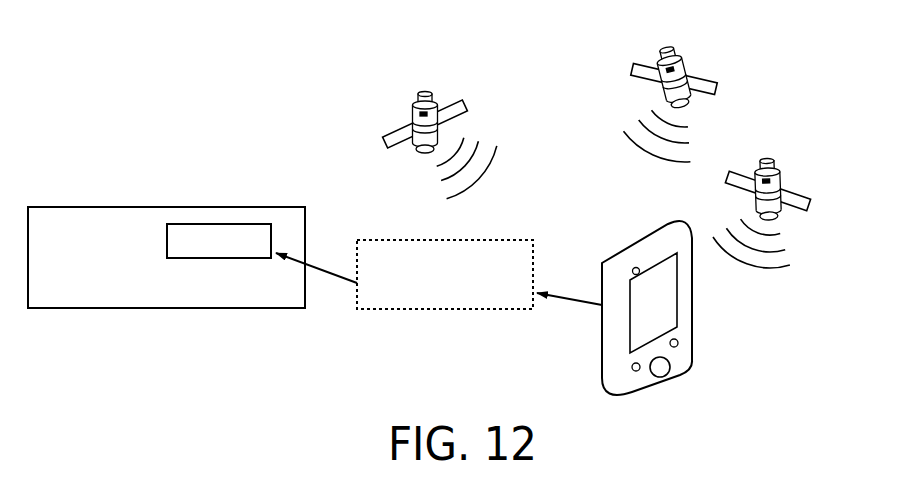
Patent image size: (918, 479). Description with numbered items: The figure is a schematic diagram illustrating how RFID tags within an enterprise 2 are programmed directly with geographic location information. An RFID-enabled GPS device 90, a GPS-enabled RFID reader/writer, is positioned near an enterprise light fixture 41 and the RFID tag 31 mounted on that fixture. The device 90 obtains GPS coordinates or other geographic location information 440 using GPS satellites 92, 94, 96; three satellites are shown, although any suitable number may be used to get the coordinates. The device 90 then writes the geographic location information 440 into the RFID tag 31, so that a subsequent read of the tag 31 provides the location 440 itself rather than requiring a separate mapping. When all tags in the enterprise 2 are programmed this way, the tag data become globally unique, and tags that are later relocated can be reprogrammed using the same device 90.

The enterprise 2 is at (145, 100).
The RFID tag 31 is at (167, 236).
The light fixture 41 is at (132, 310).
The geographic location information 440 is at (445, 312).
The RFID-enabled GPS device 90 is at (680, 359).
The GPS satellite 92 is at (381, 106).
The GPS satellite 94 is at (711, 45).
The GPS satellite 96 is at (804, 159).